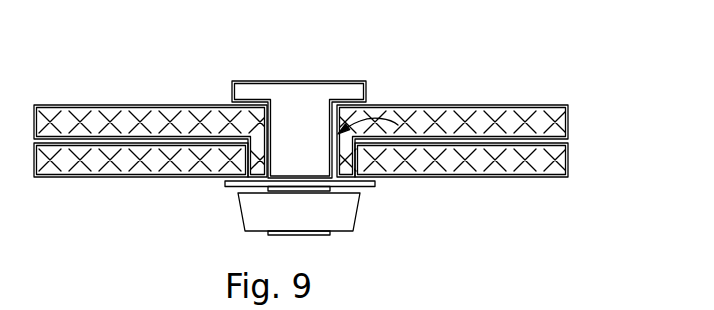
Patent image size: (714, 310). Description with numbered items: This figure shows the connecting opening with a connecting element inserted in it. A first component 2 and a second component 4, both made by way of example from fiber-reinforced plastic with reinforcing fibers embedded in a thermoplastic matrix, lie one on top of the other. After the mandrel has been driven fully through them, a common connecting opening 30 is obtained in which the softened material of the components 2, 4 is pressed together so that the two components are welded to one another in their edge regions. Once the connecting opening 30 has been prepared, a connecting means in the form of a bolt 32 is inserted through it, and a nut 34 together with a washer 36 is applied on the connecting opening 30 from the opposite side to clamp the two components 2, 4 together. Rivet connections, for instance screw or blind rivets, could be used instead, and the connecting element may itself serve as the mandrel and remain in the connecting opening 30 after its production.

The first component 2 is at (563, 120).
The second component 4 is at (554, 168).
The common connecting opening 30 is at (398, 125).
The bolt 32 is at (313, 100).
The nut 34 is at (258, 212).
The washer 36 is at (375, 184).